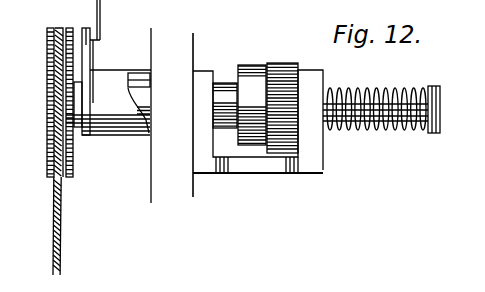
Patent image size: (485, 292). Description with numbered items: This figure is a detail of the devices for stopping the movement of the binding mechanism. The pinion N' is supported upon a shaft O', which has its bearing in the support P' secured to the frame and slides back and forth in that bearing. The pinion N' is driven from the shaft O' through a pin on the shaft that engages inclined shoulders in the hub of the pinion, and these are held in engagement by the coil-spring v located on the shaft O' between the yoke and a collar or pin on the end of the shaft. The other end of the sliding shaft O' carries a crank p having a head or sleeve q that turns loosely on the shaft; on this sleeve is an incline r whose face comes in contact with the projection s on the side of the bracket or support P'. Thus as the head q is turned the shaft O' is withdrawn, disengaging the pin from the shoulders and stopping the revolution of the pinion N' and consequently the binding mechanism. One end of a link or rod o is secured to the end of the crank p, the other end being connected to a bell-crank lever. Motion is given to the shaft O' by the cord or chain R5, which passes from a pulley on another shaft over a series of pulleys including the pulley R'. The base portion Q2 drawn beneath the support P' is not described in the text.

The pulley R' is at (52, 102).
The cord or chain R5 is at (71, 226).
The link or rod o is at (103, 20).
The crank p is at (101, 71).
The head or sleeve q is at (116, 115).
The projection s is at (139, 69).
The incline r is at (139, 110).
The support P' is at (243, 115).
The pinion N' is at (282, 98).
The base plate Q2 is at (258, 185).
The coil-spring v is at (376, 102).
The shaft O' is at (381, 118).